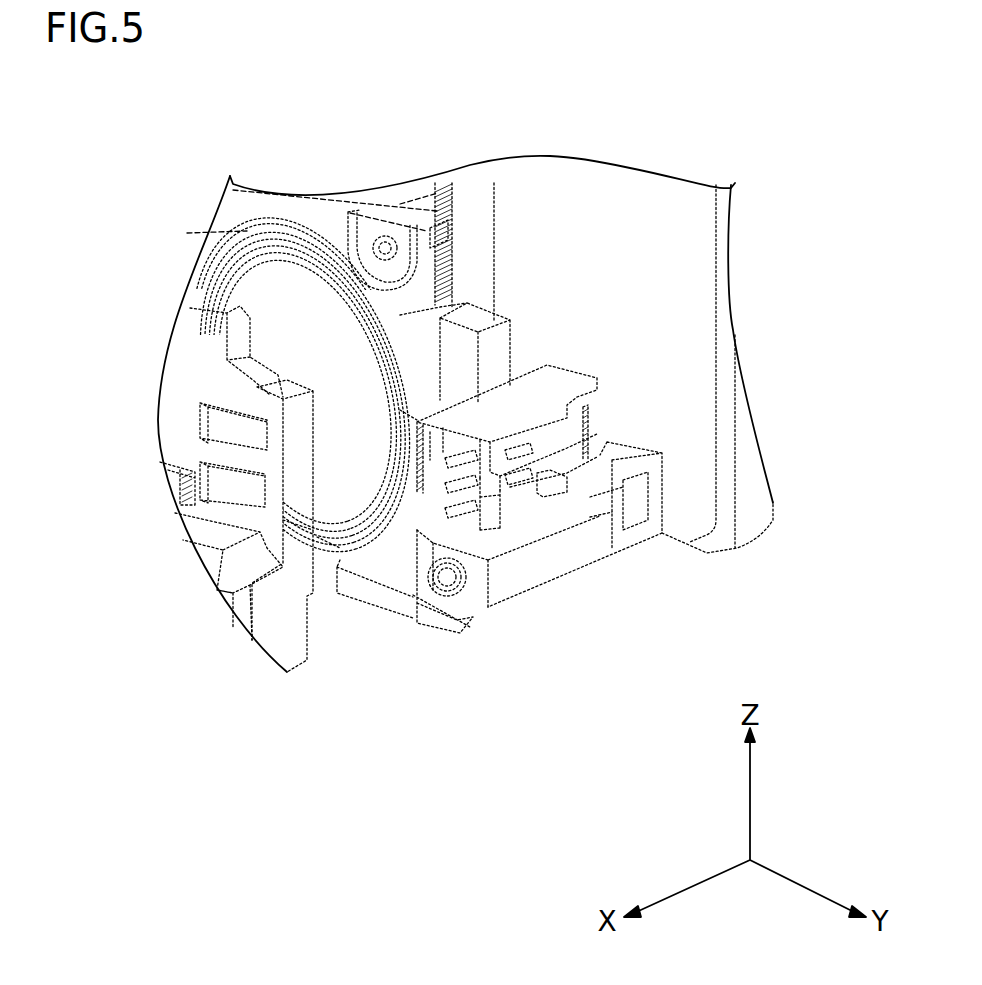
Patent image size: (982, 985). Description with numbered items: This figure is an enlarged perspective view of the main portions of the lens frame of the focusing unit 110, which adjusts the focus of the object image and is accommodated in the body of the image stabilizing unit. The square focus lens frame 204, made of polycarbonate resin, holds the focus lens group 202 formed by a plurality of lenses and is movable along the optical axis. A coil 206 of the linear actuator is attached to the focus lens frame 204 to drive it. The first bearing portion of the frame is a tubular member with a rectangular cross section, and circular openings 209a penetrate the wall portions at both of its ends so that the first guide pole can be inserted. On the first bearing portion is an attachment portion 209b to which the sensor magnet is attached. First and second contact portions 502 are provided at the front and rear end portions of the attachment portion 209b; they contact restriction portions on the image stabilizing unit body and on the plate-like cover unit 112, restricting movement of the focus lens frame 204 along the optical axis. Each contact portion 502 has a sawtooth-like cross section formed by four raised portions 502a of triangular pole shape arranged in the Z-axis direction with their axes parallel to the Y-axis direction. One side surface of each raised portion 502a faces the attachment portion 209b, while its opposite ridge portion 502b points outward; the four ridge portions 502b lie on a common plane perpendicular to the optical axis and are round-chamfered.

The focusing unit 110 is at (408, 684).
The cover unit 112 is at (180, 352).
The focus lens group 202 is at (240, 293).
The focus lens frame 204 is at (377, 212).
The coil 206 is at (753, 482).
The circular openings 209a is at (617, 497).
The attachment portion 209b is at (520, 407).
The contact portion 502 is at (712, 326).
The raised portion 502a is at (604, 420).
The ridge portion 502b is at (605, 430).